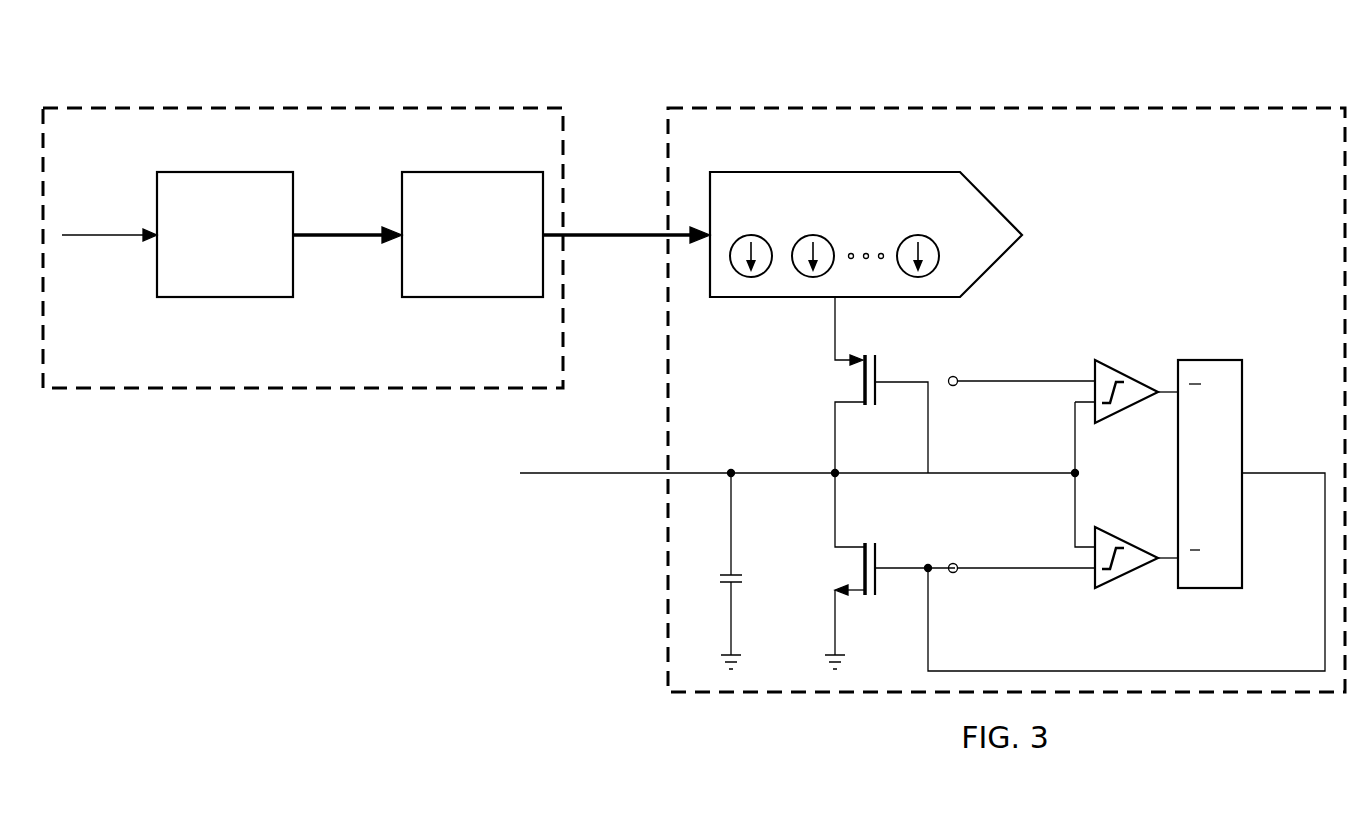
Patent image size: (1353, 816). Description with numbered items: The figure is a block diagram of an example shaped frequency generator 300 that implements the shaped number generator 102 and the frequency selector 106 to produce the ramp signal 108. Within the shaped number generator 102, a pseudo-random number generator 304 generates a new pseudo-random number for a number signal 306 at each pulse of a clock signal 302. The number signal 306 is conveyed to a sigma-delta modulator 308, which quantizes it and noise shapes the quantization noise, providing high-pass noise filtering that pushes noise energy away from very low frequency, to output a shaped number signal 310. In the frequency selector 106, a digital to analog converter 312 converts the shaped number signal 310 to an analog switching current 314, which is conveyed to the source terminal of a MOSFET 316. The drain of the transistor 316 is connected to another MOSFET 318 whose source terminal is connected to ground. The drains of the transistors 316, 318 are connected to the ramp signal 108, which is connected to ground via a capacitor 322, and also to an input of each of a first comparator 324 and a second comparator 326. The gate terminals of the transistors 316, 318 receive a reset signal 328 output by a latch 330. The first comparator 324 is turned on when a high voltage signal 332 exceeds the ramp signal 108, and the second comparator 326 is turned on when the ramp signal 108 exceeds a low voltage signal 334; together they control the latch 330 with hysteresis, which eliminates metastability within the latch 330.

The shaped frequency generator 300 is at (607, 90).
The shaped number generator 102 is at (277, 108).
The frequency selector 106 is at (1013, 108).
The clock signal 302 is at (108, 237).
The pseudo-random number generator 304 is at (224, 171).
The number signal 306 is at (348, 237).
The sigma-delta modulator 308 is at (472, 171).
The shaped number signal 310 is at (614, 237).
The digital to analog converter 312 is at (815, 171).
The switching current 314 is at (837, 328).
The metal-oxide-semiconductor field-effect transistor 316 is at (878, 392).
The MOSFET 318 is at (878, 578).
The capacitor 322 is at (743, 578).
The ramp signal 108 is at (598, 476).
The first comparator 324 is at (1128, 366).
The second comparator 326 is at (1128, 578).
The reset signal 328 is at (1283, 476).
The latch 330 is at (1208, 590).
The high voltage signal 332 is at (1003, 384).
The low voltage signal 334 is at (1003, 571).